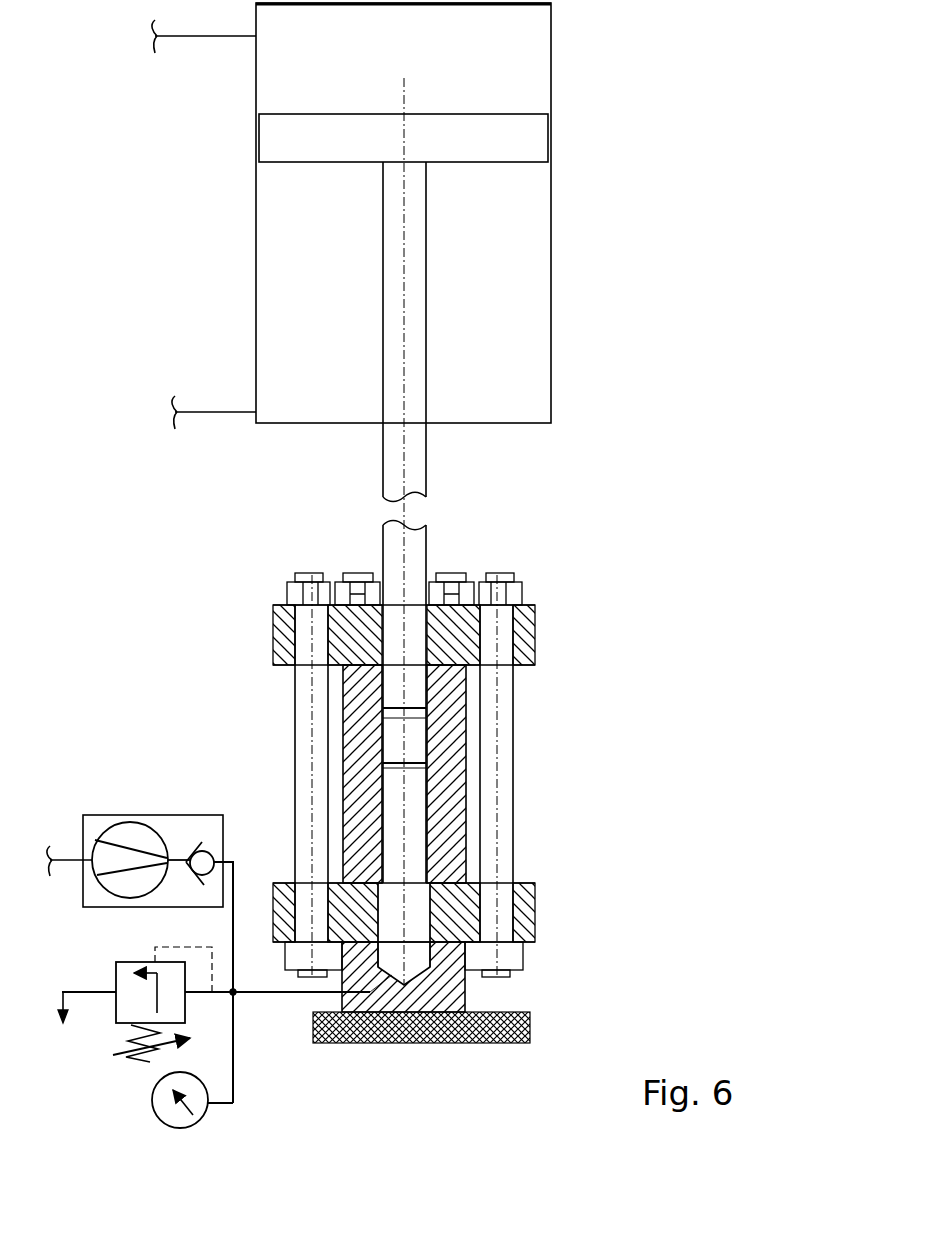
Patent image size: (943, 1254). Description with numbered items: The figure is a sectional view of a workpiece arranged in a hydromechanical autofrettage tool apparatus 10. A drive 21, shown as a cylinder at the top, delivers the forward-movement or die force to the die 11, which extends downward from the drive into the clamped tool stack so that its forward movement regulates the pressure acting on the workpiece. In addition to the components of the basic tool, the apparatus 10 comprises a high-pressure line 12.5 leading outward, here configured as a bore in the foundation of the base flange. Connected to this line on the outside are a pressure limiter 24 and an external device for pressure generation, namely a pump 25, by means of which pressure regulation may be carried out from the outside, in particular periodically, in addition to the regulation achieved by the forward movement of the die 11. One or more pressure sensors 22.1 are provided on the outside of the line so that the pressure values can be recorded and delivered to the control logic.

The hydromechanical autofrettage tool apparatus 10 is at (181, 658).
The die 11 is at (457, 539).
The high-pressure line 12.5 is at (363, 1003).
The drive 21 is at (252, 218).
The pressure sensor 22.1 is at (207, 1130).
The pressure limiter 24 is at (112, 1030).
The pump 25 is at (138, 813).